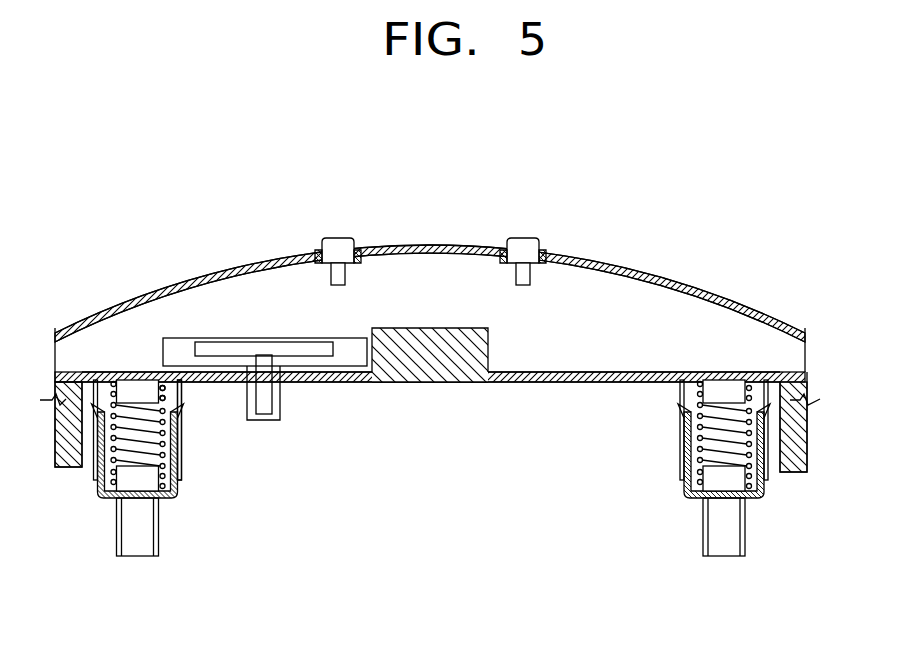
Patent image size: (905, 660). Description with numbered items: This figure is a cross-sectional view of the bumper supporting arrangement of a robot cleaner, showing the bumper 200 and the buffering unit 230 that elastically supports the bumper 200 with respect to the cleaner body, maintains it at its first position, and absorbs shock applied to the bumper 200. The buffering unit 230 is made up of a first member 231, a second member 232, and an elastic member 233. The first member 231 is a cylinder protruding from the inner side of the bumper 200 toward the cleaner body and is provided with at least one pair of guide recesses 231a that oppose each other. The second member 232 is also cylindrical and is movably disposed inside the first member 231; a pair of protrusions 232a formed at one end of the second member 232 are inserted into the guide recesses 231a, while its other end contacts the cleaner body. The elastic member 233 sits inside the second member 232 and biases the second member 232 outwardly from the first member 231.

The bumper 200 is at (634, 266).
The buffering unit 230 is at (431, 395).
The first member 231 is at (167, 442).
The guide recesses 231a is at (183, 395).
The second member 232 is at (181, 458).
The protrusions 232a is at (181, 420).
The elastic member 233 is at (182, 470).